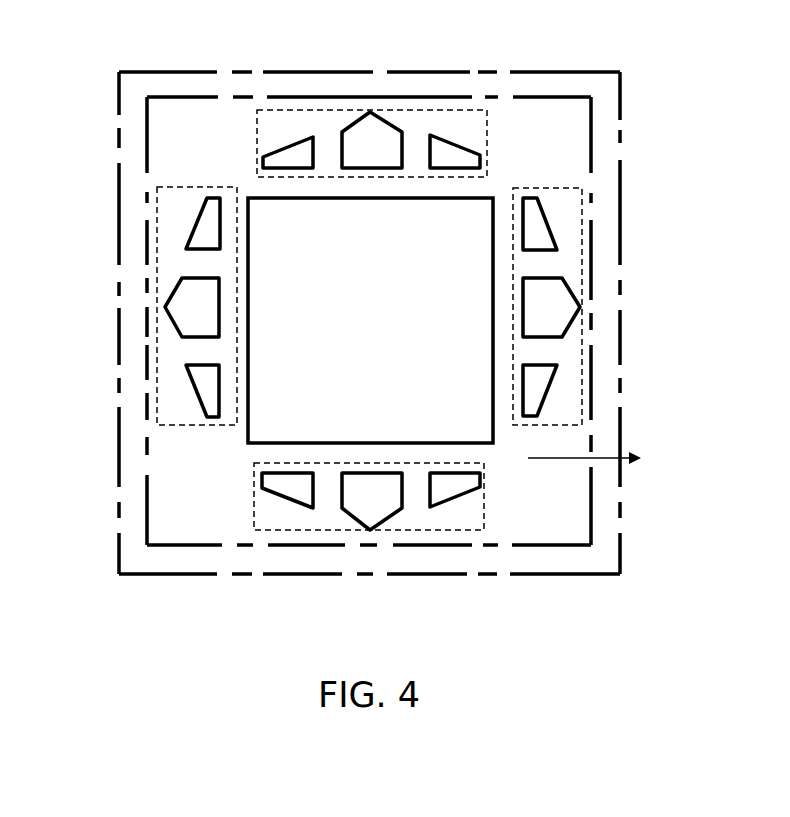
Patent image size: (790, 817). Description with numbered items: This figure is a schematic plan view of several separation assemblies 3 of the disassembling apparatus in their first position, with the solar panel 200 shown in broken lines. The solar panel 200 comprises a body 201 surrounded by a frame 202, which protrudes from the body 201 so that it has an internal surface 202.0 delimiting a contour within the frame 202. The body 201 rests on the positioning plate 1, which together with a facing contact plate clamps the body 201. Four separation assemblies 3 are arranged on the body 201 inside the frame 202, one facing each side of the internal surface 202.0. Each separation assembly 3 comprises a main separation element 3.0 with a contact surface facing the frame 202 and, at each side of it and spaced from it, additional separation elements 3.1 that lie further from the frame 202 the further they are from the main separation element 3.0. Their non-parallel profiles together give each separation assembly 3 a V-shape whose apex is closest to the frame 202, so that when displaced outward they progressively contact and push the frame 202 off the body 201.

The solar panel 200 is at (637, 87).
The frame 202 is at (128, 178).
The internal surface 202.0 is at (152, 131).
The body 201 is at (578, 515).
The positioning plate 1 is at (386, 327).
The separation assembly 3 is at (496, 121).
The main separation element 3.0 is at (187, 302).
The additional separation element 3.1 is at (205, 223).